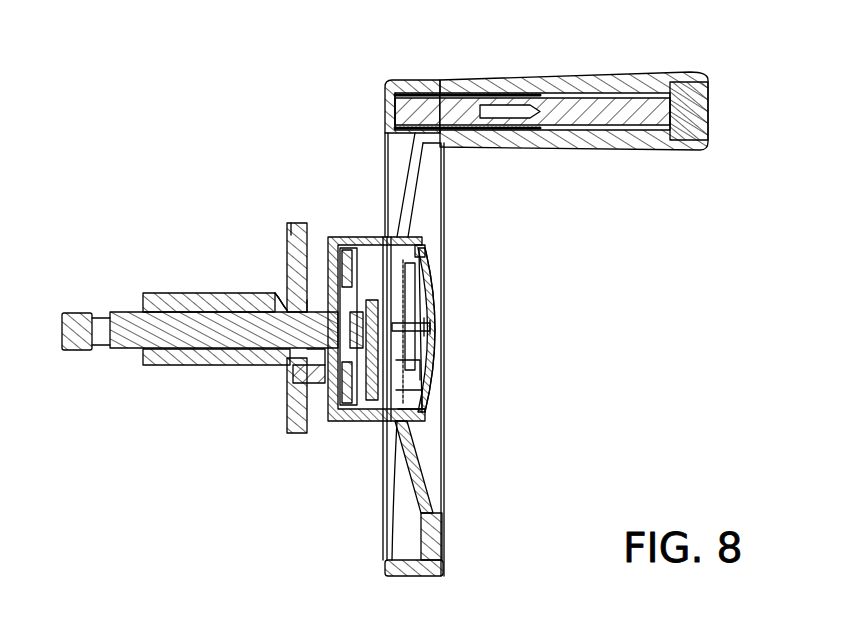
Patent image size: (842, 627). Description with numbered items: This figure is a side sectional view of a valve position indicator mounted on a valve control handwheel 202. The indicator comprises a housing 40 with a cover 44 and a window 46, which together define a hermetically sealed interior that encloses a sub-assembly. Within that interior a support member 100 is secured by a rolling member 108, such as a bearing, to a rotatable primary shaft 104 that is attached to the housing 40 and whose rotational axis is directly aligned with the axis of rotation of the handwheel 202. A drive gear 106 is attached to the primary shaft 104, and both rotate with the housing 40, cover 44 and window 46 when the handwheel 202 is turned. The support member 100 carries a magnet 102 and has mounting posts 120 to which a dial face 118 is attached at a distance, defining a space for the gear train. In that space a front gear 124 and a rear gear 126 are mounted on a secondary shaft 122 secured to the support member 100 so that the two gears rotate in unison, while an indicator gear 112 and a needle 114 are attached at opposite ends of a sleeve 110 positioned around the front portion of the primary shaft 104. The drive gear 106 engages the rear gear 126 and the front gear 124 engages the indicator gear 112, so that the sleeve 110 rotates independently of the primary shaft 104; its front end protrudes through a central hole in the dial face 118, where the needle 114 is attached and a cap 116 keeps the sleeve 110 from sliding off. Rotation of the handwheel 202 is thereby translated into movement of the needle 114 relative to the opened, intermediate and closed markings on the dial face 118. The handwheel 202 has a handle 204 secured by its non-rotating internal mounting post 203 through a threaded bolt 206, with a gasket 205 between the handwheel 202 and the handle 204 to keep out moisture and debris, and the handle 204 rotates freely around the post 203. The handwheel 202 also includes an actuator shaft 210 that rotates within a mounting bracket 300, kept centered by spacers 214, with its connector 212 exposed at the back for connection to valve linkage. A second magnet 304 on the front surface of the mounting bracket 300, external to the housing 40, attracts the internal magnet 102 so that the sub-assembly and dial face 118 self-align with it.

The housing 40 is at (338, 238).
The cover 44 is at (428, 243).
The window 46 is at (436, 312).
The support member 100 is at (346, 250).
The magnet 102 is at (370, 408).
The primary shaft 104 is at (432, 330).
The drive gear 106 is at (386, 237).
The rolling member 108 is at (300, 278).
The sleeve 110 is at (425, 260).
The indicator gear 112 is at (444, 200).
The needle 114 is at (433, 282).
The cap 116 is at (424, 366).
The dial face 118 is at (428, 421).
The mounting posts 120 is at (426, 396).
The secondary shaft 122 is at (420, 428).
The front gear 124 is at (387, 560).
The rear gear 126 is at (388, 480).
The handwheel 202 is at (410, 78).
The internal mounting post 203 is at (700, 100).
The handle 204 is at (650, 78).
The gasket 205 is at (445, 92).
The threaded bolt 206 is at (530, 98).
The actuator shaft 210 is at (118, 316).
The connector 212 is at (100, 350).
The spacers 214 is at (150, 293).
The mounting bracket 300 is at (290, 225).
The magnet 304 is at (314, 386).